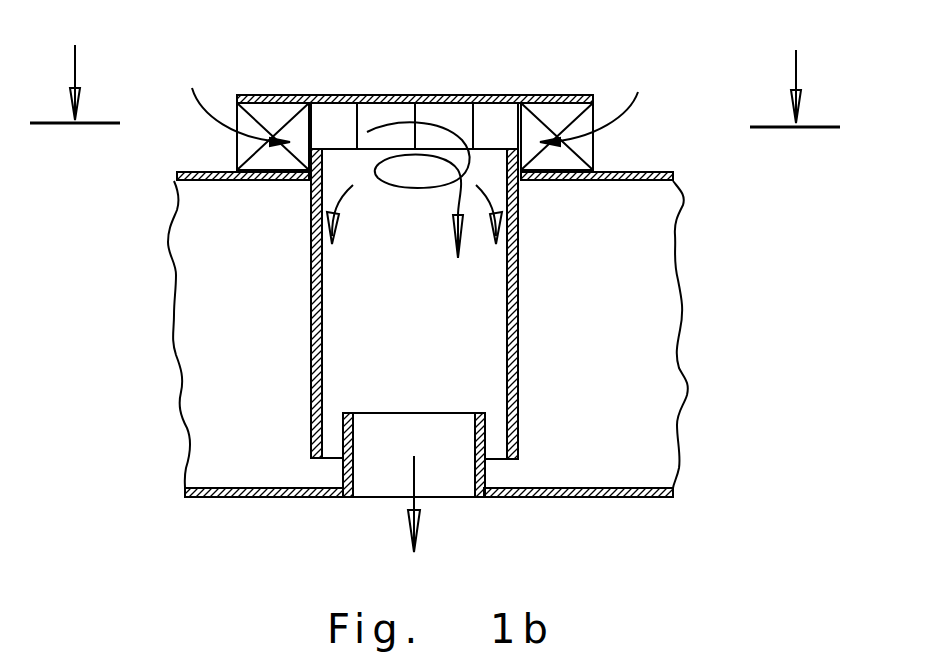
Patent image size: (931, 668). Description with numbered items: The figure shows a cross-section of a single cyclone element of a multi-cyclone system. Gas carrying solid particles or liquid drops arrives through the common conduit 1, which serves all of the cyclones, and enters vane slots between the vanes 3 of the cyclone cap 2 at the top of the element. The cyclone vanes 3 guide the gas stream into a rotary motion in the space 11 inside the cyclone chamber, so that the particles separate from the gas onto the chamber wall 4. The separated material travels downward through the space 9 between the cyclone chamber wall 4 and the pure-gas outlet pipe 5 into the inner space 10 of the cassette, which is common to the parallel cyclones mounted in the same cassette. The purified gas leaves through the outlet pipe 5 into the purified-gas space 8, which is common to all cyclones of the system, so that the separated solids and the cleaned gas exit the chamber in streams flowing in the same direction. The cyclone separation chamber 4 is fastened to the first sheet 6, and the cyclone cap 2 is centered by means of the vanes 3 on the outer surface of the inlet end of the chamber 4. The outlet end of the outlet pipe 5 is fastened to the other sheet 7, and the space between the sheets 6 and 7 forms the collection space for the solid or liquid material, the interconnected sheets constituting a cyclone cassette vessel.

The common conduit 1 is at (414, 77).
The cyclone cap 2 is at (447, 97).
The vanes 3 is at (287, 117).
The cyclone chamber wall 4 is at (310, 328).
The pure-gas outlet pipe 5 is at (342, 468).
The first sheet 6 is at (632, 177).
The other sheet 7 is at (600, 495).
The purified-gas space 8 is at (393, 510).
The space between cyclone chamber wall and outlet pipe 9 is at (493, 425).
The inner space of the cassette 10 is at (230, 242).
The space inside the cyclone chamber 11 is at (414, 204).